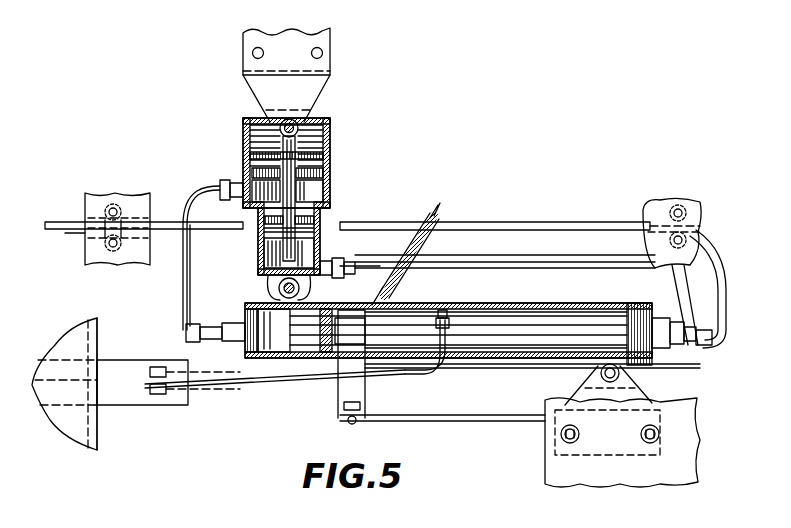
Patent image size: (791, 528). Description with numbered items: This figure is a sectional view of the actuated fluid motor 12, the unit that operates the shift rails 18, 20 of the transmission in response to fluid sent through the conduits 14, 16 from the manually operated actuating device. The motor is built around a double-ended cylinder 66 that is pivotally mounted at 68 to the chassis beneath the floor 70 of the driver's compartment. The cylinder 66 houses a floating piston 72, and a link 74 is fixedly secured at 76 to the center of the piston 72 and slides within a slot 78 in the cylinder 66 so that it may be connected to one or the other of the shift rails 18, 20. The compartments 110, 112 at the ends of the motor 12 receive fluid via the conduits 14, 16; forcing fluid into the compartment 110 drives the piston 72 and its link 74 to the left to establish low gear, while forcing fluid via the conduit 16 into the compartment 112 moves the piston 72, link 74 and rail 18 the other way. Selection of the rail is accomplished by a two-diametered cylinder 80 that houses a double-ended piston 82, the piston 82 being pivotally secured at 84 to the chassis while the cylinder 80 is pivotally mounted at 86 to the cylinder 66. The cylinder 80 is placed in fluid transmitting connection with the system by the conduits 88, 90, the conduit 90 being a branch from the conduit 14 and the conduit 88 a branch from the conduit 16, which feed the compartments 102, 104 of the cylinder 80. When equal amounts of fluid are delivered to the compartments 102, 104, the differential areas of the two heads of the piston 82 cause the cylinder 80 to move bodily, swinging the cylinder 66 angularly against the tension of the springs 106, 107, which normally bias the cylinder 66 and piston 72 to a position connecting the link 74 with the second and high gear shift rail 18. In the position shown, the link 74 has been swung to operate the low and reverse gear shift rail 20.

The actuated fluid motor 12 is at (393, 208).
The conduit 14 is at (486, 222).
The conduit 16 is at (168, 262).
The shift rail 18 is at (110, 368).
The shift rail 20 is at (122, 397).
The double-ended cylinder 66 is at (462, 306).
The pivotal mounting 68 is at (600, 374).
The floor 70 is at (668, 472).
The floating piston 72 is at (556, 308).
The link 74 is at (336, 395).
The securing point 76 is at (466, 356).
The slot 78 is at (488, 368).
The two-diametered cylinder 80 is at (332, 186).
The double-ended piston 82 is at (250, 174).
The pivotal securing point 84 is at (298, 128).
The pivotal mounting 86 is at (300, 290).
The conduit 88 is at (185, 195).
The conduit 90 is at (555, 265).
The compartment 102 is at (318, 192).
The compartment 104 is at (272, 258).
The spring 106 is at (412, 243).
The spring 107 is at (331, 122).
The compartment 110 is at (613, 326).
The compartment 112 is at (296, 356).